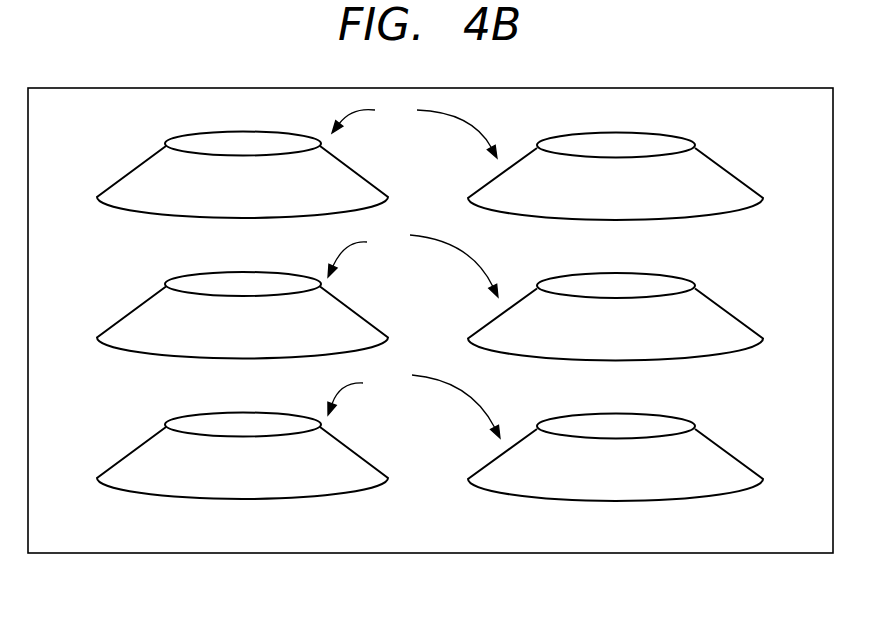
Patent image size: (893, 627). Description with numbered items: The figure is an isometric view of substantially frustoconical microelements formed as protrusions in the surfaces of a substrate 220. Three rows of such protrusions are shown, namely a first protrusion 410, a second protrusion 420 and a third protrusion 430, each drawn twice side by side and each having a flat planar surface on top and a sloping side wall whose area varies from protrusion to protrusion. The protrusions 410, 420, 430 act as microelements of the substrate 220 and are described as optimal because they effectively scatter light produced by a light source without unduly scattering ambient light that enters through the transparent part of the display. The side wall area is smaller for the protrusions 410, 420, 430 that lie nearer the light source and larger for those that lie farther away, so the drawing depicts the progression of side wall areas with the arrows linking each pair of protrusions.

The substrate 220 is at (661, 97).
The frustoconical protrusion 410 is at (414, 127).
The frustoconical protrusion 420 is at (413, 257).
The frustoconical protrusion 430 is at (414, 400).